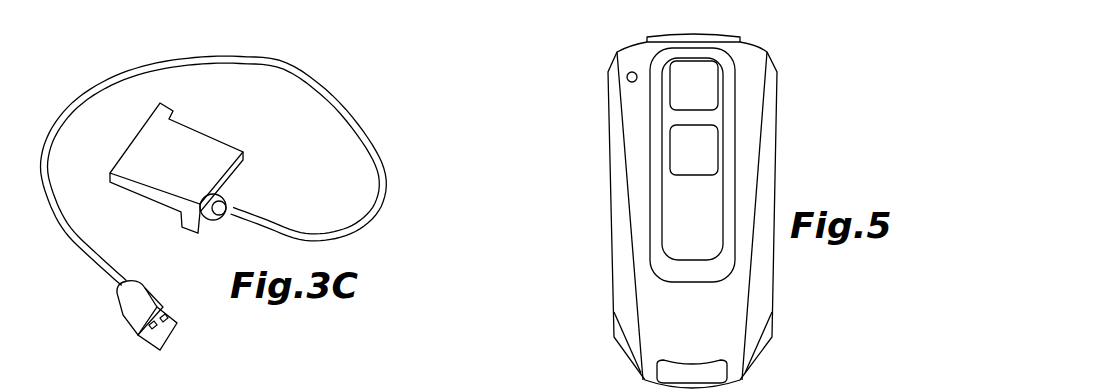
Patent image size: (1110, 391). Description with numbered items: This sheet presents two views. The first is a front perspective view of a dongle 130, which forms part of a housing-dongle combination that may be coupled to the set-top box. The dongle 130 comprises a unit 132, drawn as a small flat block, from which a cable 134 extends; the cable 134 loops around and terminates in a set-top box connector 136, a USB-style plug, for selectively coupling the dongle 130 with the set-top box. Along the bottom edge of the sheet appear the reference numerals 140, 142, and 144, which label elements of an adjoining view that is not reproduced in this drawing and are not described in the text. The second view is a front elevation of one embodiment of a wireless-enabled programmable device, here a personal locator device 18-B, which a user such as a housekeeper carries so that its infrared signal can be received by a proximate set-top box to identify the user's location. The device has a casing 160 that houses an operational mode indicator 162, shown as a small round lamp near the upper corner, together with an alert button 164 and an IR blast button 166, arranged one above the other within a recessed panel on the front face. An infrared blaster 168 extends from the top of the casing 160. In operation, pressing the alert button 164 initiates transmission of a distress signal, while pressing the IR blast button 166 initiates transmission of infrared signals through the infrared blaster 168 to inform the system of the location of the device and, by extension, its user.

In FIG. 3C, the dongle 130 is at (366, 101).
In FIG. 3C, the unit 132 is at (205, 147).
In FIG. 3C, the cable 134 is at (382, 163).
In FIG. 3C, the set-top box connector 136 is at (177, 342).
In FIG. 3C, the element 140 is at (281, 390).
In FIG. 3C, the element 142 is at (414, 390).
In FIG. 3C, the element 144 is at (544, 390).
In FIG. 5, the personal locator device 18-B is at (583, 75).
In FIG. 5, the casing 160 is at (757, 110).
In FIG. 5, the operational mode indicator 162 is at (627, 80).
In FIG. 5, the alert button 164 is at (710, 80).
In FIG. 5, the IR blast button 166 is at (707, 150).
In FIG. 5, the infrared blaster 168 is at (710, 33).